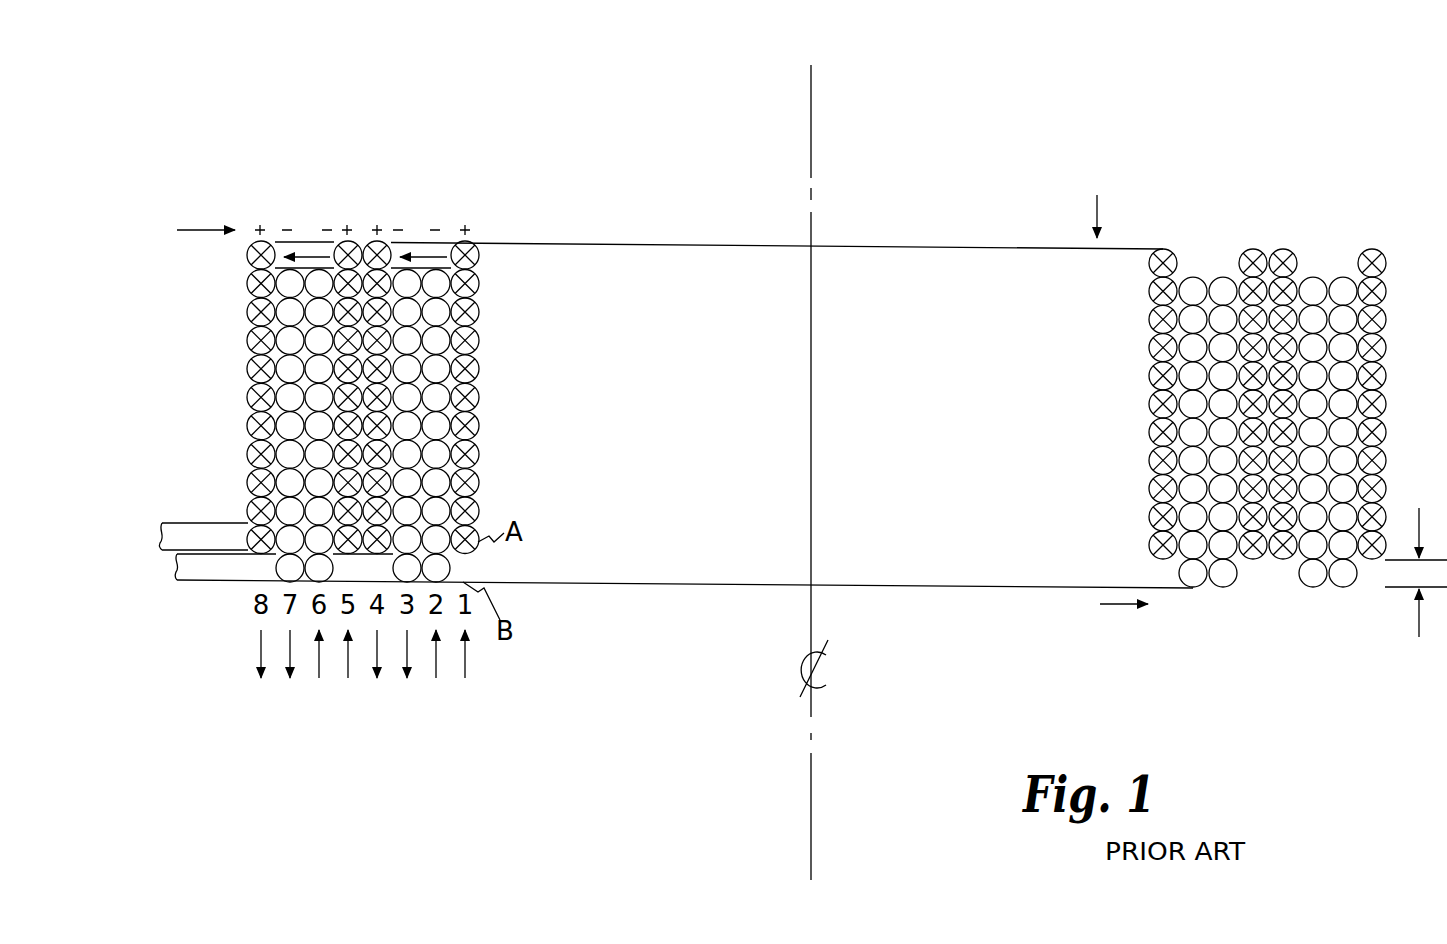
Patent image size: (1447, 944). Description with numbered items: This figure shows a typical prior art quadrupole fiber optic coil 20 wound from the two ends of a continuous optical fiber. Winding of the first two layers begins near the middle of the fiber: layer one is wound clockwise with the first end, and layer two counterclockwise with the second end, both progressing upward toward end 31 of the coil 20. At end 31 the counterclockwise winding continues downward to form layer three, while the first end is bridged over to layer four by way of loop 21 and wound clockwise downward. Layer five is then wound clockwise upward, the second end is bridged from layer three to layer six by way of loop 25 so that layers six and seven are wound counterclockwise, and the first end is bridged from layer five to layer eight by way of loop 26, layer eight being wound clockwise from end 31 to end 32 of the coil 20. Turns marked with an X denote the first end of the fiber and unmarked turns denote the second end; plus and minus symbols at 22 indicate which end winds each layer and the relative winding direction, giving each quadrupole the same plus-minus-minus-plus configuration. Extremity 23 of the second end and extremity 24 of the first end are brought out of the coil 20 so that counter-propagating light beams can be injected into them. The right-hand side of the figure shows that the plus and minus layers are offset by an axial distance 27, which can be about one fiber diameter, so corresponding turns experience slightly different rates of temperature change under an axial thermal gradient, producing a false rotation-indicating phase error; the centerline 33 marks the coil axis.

The quadrupole fiber optic coil 20 is at (955, 232).
The loop 21 is at (406, 242).
The plus and minus symbols 22 is at (207, 213).
The extremity of the second end of the fiber 23 is at (190, 582).
The extremity of the first end of the fiber 24 is at (185, 523).
The loop 25 is at (358, 582).
The loop 26 is at (310, 242).
The axial distance 27 is at (1416, 553).
The end of coil 31 is at (683, 245).
The end of coil 32 is at (674, 614).
The coil axis centerline 33 is at (811, 797).